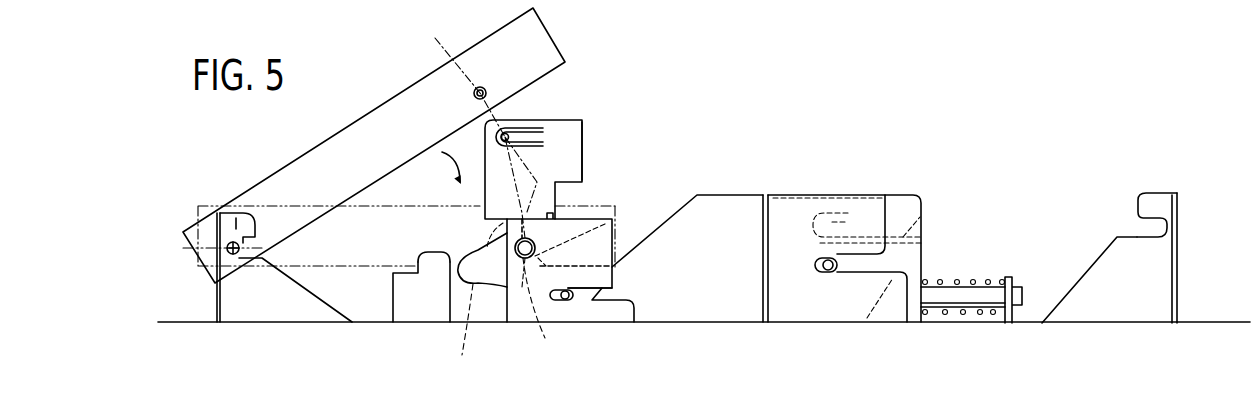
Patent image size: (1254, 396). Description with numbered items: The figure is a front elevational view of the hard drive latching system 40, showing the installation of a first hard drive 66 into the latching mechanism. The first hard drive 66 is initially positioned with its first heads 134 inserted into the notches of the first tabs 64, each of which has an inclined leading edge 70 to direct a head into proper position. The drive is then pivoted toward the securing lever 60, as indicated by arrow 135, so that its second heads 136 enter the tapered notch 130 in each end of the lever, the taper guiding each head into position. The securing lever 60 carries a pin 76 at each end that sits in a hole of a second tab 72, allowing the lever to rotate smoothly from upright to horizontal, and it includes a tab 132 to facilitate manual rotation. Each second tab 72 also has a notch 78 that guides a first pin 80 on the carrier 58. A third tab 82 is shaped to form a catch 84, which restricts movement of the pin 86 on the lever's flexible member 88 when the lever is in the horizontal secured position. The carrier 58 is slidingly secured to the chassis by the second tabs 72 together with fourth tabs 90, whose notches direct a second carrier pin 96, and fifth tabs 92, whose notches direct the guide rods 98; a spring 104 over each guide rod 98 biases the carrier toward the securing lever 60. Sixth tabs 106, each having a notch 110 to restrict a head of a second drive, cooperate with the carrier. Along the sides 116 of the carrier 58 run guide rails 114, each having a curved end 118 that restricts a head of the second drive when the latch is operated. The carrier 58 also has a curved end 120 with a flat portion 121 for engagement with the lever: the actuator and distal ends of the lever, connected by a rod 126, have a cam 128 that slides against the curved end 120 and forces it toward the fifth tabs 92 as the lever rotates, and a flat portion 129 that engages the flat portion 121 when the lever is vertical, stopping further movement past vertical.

The latching system 40 is at (797, 104).
The carrier 58 is at (748, 190).
The securing lever 60 is at (589, 116).
The first tab 64 is at (245, 315).
The first hard drive 66 is at (378, 107).
The inclined leading edge 70 is at (305, 292).
The second tab 72 is at (625, 315).
The pin 76 is at (530, 246).
The notch 78 is at (612, 288).
The first pin 80 is at (565, 300).
The third tab 82 is at (413, 307).
The catch 84 is at (417, 263).
The pin 86 is at (507, 131).
The flexible member 88 is at (527, 130).
The fourth tab 90 is at (788, 307).
The fifth tab 92 is at (1008, 280).
The second carrier pin 96 is at (829, 272).
The guide rod 98 is at (958, 297).
The spring 104 is at (972, 280).
The sixth tab 106 is at (1162, 277).
The notch 110 is at (1138, 233).
The guide rail 114 is at (926, 215).
The side 116 is at (739, 245).
The curved end 118 is at (811, 219).
The curved end 120 is at (492, 250).
The flat portion 121 is at (573, 250).
The rod 126 is at (459, 330).
The cam 128 is at (543, 310).
The flat portion 129 is at (620, 220).
The tapered notch 130 is at (495, 138).
The tab 132 is at (583, 149).
The first heads 134 is at (214, 257).
The arrow 135 is at (444, 169).
The second heads 136 is at (485, 87).